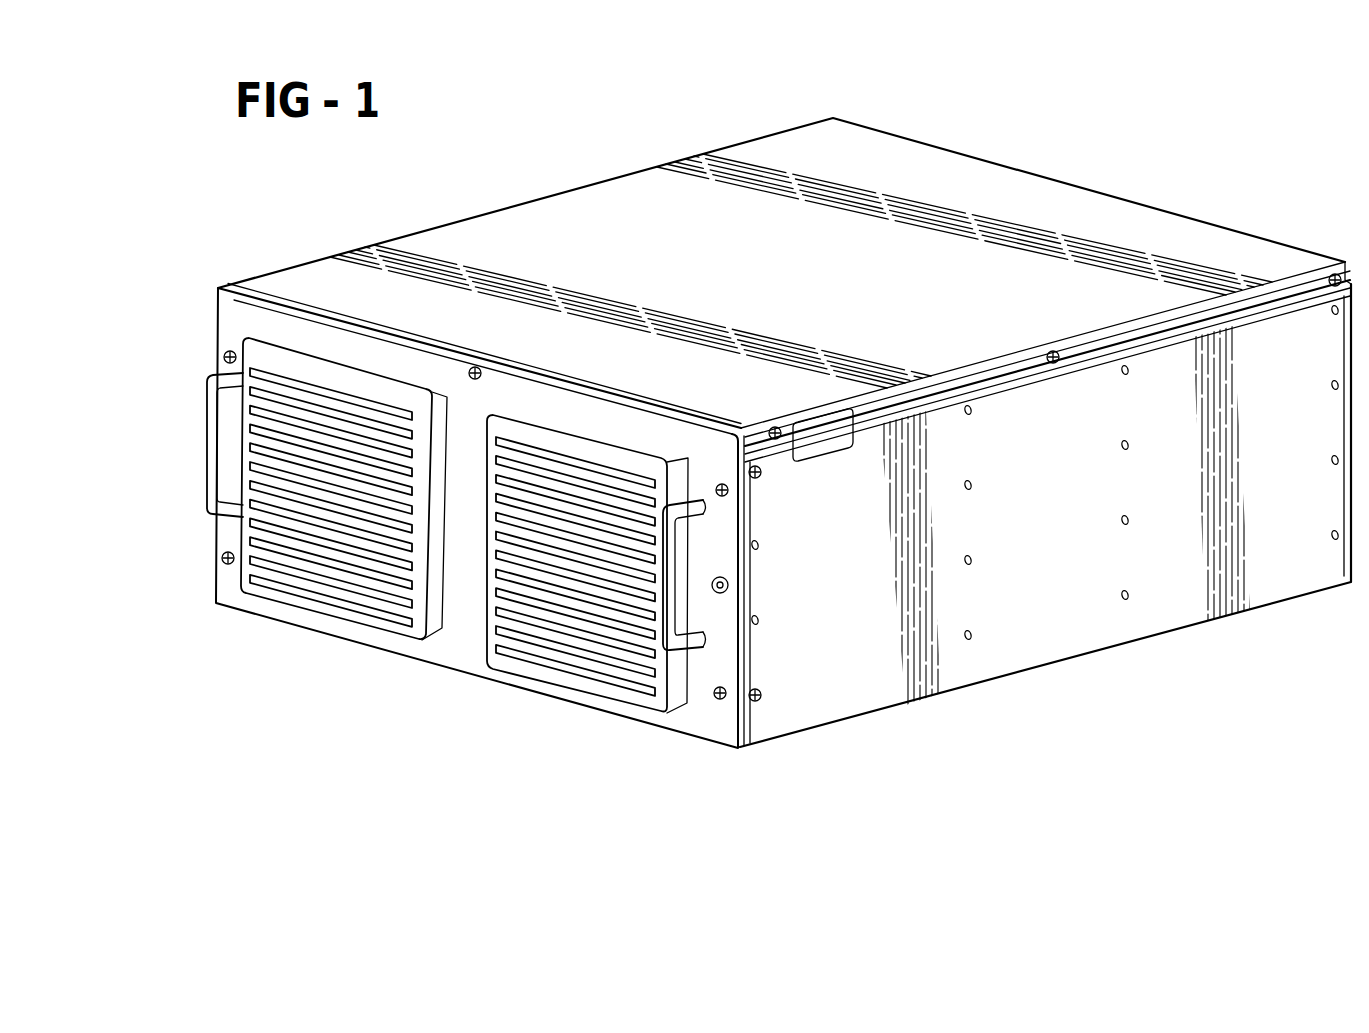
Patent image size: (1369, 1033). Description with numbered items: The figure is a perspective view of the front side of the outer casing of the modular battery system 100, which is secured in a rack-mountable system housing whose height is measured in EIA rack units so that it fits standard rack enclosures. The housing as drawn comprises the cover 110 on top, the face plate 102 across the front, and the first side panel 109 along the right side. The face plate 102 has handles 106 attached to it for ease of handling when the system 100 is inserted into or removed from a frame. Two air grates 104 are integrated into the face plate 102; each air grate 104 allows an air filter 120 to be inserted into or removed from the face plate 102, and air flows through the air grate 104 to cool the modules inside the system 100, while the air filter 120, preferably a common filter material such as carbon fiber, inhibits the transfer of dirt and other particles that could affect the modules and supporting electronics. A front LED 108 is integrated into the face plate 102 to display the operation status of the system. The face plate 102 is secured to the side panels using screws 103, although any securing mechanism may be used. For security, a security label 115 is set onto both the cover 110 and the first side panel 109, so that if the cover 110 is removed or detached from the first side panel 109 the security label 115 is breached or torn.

The modular battery system 100 is at (518, 146).
The face plate 102 is at (458, 628).
The screws 103 is at (718, 698).
The air grate 104 is at (235, 537).
The handles 106 is at (205, 437).
The front LED 108 is at (732, 586).
The first side panel 109 is at (1072, 626).
The cover 110 is at (910, 165).
The security label 115 is at (822, 447).
The air filter 120 is at (342, 583).